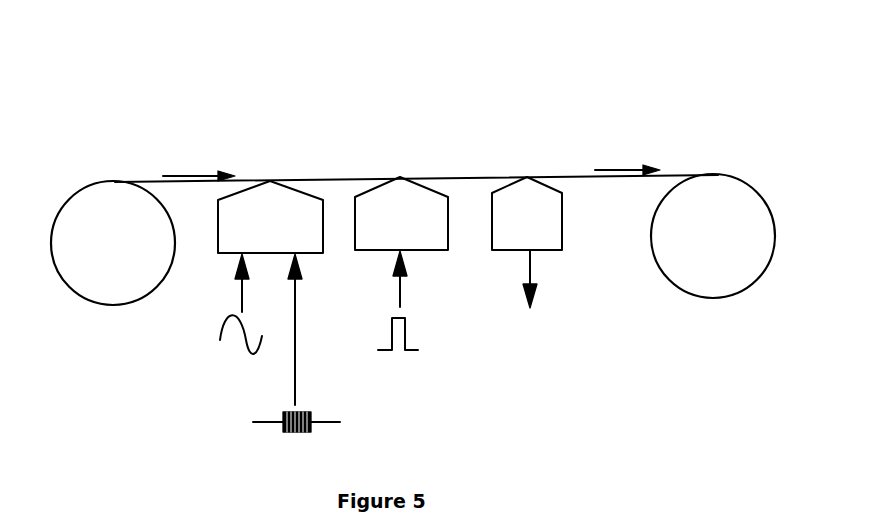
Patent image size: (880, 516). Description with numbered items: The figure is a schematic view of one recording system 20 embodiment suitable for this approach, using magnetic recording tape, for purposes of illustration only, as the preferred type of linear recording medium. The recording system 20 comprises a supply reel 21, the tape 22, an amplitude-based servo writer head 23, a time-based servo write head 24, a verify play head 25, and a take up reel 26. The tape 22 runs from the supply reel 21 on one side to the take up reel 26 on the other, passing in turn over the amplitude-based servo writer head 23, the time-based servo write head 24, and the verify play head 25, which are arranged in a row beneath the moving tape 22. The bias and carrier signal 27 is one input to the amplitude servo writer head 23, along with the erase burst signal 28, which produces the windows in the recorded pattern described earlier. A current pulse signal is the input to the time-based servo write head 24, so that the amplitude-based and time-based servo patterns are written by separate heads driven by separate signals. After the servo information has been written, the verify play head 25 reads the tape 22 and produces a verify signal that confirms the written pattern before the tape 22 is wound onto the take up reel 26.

The recording system 20 is at (551, 128).
The supply reel 21 is at (90, 300).
The tape 22 is at (248, 178).
The amplitude-based servo writer head 23 is at (276, 241).
The time-based servo write head 24 is at (416, 235).
The verify play head 25 is at (537, 234).
The take up reel 26 is at (733, 290).
The bias and carrier signal 27 is at (242, 301).
The erase burst signal 28 is at (299, 375).